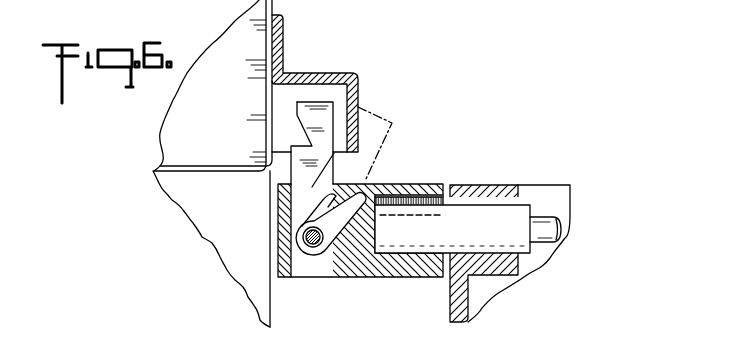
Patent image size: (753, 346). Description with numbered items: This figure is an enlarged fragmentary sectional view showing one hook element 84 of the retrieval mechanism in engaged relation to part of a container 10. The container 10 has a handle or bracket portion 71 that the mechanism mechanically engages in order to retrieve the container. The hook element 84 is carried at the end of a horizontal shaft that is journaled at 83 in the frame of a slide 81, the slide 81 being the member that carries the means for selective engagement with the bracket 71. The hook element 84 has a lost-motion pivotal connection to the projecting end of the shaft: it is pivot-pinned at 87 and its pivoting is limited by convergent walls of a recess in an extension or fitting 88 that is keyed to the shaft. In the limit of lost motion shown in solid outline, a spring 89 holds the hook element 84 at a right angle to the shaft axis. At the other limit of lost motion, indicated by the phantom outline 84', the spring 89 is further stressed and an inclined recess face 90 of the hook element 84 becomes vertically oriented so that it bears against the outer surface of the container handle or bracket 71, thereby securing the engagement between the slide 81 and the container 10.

The container 10 is at (222, 117).
The inclined recess face 90 is at (297, 117).
The handle or bracket portion 71 is at (342, 72).
The hook element 84 is at (350, 128).
The hook element in phantom outline 84' is at (403, 144).
The extension or fitting 88 is at (365, 265).
The slide 81 is at (452, 292).
The shaft journal 83 is at (487, 215).
The spring 89 is at (310, 201).
The pivot pin 87 is at (312, 248).